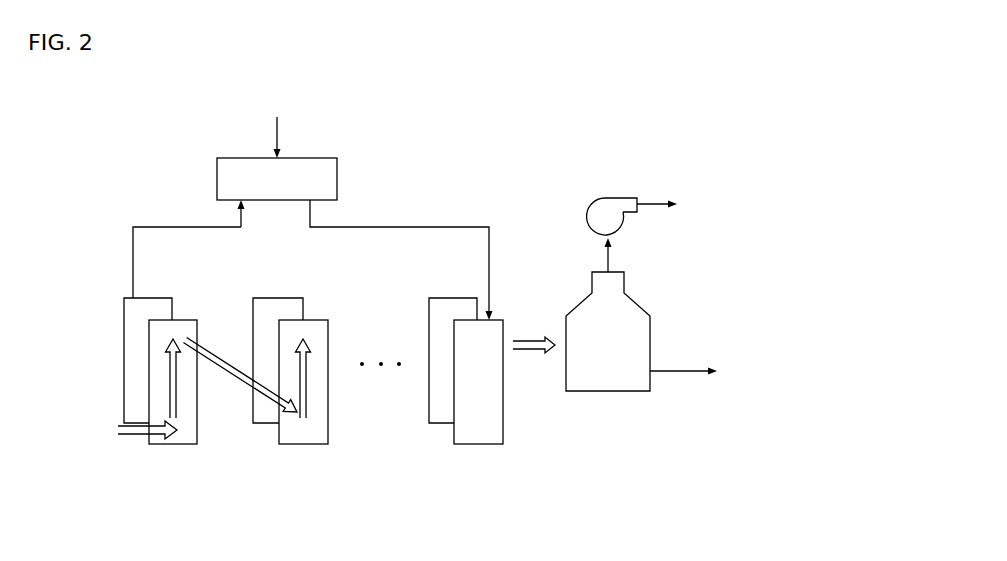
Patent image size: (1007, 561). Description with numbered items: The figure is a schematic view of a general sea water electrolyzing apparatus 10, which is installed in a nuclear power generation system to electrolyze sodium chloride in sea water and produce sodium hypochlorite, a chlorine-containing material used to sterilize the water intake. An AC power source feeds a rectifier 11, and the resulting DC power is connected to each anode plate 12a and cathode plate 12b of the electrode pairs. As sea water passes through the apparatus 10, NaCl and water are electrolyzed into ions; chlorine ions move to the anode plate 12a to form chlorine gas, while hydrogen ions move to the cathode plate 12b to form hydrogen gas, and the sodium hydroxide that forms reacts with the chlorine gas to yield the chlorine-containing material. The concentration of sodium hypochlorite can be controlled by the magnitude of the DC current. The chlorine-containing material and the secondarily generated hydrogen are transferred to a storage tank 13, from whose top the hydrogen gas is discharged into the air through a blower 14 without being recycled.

The sea water electrolyzing apparatus 10 is at (543, 137).
The rectifier 11 is at (337, 177).
The anode plate 12a is at (152, 447).
The cathode plate 12b is at (124, 327).
The storage tank 13 is at (607, 392).
The blower 14 is at (623, 221).